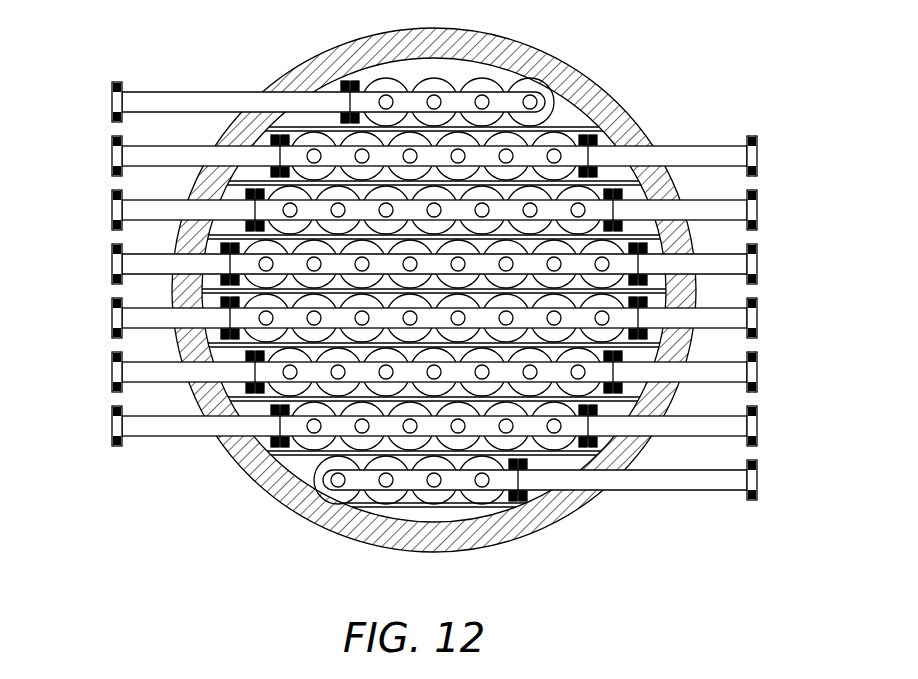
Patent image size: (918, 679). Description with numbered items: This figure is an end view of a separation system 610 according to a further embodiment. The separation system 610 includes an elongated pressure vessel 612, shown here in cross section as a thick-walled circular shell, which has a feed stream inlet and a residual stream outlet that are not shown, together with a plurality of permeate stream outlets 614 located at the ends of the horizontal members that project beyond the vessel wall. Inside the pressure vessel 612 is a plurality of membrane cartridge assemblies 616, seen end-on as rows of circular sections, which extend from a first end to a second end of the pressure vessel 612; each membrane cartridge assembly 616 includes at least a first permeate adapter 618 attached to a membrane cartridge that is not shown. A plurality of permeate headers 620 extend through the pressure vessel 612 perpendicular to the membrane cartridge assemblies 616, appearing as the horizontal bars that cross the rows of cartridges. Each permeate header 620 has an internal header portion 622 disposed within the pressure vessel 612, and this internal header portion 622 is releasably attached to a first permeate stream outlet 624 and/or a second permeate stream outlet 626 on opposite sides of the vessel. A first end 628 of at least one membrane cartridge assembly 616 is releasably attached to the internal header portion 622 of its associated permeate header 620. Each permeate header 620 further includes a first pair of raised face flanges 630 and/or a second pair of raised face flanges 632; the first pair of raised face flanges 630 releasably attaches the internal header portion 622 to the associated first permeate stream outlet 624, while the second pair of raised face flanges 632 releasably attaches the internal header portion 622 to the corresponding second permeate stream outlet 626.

The separation system 610 is at (646, 36).
The elongated pressure vessel 612 is at (497, 37).
The permeate stream outlets 614 is at (117, 263).
The membrane cartridge assemblies 616 is at (500, 82).
The first permeate adapter 618 is at (248, 247).
The permeate headers 620 is at (359, 250).
The internal header portion 622 is at (245, 265).
The first permeate stream outlet 624 is at (145, 265).
The second permeate stream outlet 626 is at (723, 262).
The first end 628 is at (617, 259).
The first pair of raised face flanges 630 is at (222, 281).
The second pair of raised face flanges 632 is at (648, 279).